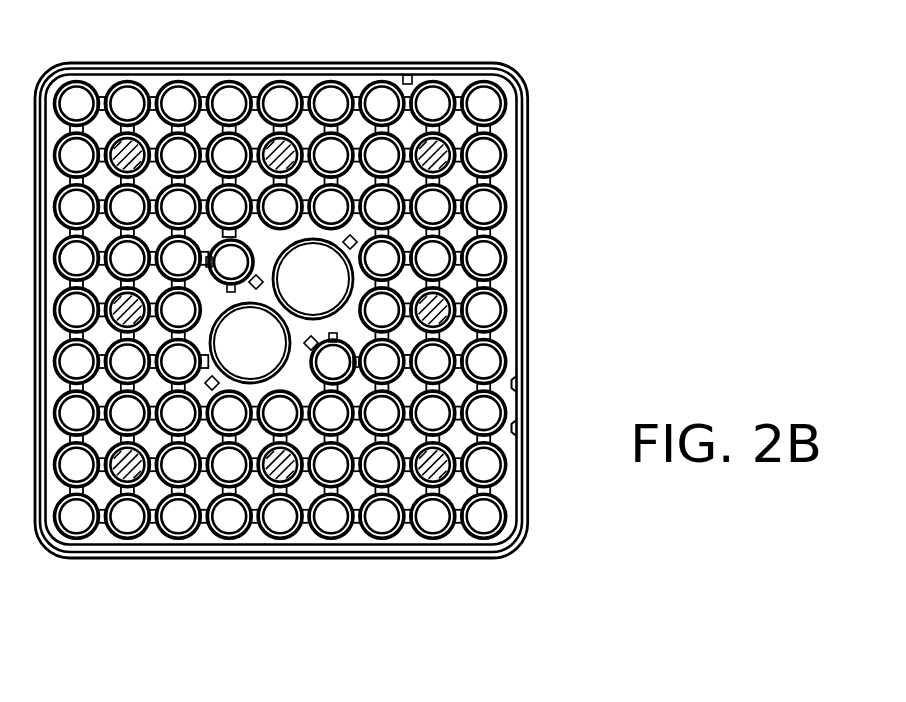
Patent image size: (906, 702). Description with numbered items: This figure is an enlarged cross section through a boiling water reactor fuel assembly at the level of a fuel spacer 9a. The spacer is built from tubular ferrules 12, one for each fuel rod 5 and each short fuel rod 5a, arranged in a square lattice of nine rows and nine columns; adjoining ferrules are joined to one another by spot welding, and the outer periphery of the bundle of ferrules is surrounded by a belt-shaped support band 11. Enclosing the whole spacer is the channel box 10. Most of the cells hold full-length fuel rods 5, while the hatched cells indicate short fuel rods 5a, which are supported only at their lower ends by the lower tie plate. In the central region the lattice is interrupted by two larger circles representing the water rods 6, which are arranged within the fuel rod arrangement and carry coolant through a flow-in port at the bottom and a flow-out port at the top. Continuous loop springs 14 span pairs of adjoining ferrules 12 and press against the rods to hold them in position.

The fuel rod 5 is at (495, 310).
The short fuel rod 5a is at (455, 157).
The water rod 6 is at (302, 298).
The fuel spacer 9a is at (465, 58).
The channel box 10 is at (524, 225).
The support band 11 is at (520, 480).
The tubular ferrule 12 is at (517, 427).
The continuous loop spring 14 is at (407, 88).